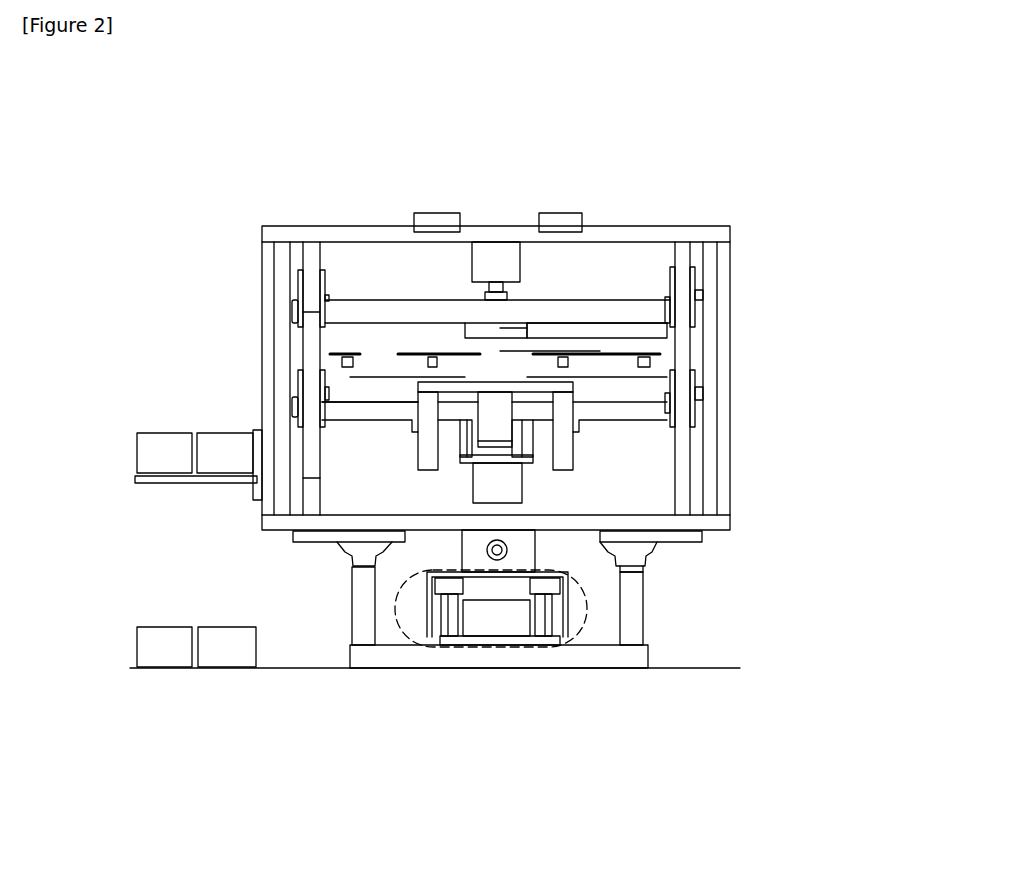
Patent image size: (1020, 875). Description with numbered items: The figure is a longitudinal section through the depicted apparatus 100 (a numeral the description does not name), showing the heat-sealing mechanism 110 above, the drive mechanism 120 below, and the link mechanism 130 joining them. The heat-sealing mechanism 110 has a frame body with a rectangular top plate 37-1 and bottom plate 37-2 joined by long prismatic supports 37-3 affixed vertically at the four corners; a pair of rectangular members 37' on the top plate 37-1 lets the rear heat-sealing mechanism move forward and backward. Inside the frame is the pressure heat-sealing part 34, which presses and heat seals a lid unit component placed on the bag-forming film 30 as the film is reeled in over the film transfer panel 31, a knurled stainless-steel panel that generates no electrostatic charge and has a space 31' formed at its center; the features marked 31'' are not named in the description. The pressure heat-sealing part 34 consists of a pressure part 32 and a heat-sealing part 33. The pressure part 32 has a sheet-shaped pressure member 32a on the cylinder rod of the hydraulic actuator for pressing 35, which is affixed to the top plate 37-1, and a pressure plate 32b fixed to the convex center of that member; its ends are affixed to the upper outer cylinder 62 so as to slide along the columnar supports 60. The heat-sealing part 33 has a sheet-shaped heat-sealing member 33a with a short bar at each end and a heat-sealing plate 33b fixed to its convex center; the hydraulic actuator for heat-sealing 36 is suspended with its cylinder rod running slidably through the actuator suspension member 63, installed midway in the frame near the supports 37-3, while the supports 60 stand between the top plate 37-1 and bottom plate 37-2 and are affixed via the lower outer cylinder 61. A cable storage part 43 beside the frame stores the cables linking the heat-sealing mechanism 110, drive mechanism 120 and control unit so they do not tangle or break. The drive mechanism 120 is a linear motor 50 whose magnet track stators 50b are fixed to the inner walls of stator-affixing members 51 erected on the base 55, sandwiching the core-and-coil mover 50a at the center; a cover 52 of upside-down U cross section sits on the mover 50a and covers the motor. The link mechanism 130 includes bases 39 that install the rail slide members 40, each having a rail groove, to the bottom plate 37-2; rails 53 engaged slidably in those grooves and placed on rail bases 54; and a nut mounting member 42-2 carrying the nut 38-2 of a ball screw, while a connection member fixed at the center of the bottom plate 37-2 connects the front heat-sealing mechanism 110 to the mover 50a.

The bonding apparatus 100 is at (467, 163).
The heat-sealing mechanism 110 is at (249, 264).
The link mechanism 130 is at (226, 540).
The hydraulic actuator for pressing 35 is at (493, 263).
The pair of rectangular members 37' is at (498, 196).
The top plate 37-1 is at (690, 226).
The support 37-3 is at (730, 256).
The bottom plate 37-2 is at (712, 523).
The bag-forming film 30 is at (293, 323).
The outer cylinder 62 is at (298, 310).
The outer cylinder 61 is at (300, 402).
The support 60 is at (302, 480).
The pressure heat-sealing part 34 is at (838, 272).
The pressure part 32 is at (808, 262).
The sheet-shaped pressure member 32a is at (655, 313).
The pressure plate 32b is at (600, 337).
The heat-sealing part 33 is at (808, 357).
The heat-sealing member 33a is at (610, 414).
The heat-sealing plate 33b is at (575, 386).
The actuator suspension member 63 is at (370, 413).
The hydraulic actuator for heat-sealing 36 is at (522, 487).
The film transfer panel 31 is at (275, 334).
The space 31' is at (405, 347).
The clamp 31'' is at (415, 386).
The cable storage part 43 is at (166, 433).
The base 39 is at (290, 536).
The rail slide member 40 is at (340, 560).
The nut 38-2 is at (615, 548).
The rail 53 is at (634, 574).
The nut mounting member 42-2 is at (352, 590).
The rail base 54 is at (643, 604).
The base 55 is at (643, 653).
The drive mechanism 120 is at (413, 632).
The stator-affixing member 51 is at (446, 630).
The linear motor 50 is at (582, 722).
The mover 50a is at (515, 620).
The magnet track stator 50b is at (463, 610).
The cover 52 is at (567, 610).